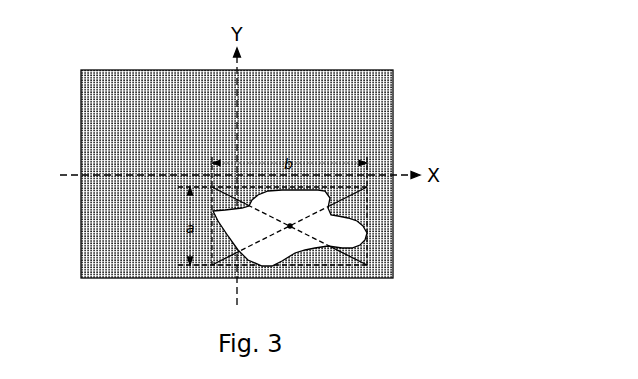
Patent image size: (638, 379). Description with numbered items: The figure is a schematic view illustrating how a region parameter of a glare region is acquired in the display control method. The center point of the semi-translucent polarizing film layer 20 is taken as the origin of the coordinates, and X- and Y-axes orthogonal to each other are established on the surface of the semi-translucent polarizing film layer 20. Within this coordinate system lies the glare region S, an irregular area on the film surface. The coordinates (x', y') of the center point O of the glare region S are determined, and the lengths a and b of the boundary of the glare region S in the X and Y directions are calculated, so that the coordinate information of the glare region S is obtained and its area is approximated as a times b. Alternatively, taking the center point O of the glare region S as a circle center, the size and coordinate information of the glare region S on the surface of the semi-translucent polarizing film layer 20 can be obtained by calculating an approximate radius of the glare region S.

The semi-translucent polarizing film layer 20 is at (101, 26).
The glare region S is at (336, 235).
The center point of the glare region O is at (290, 226).